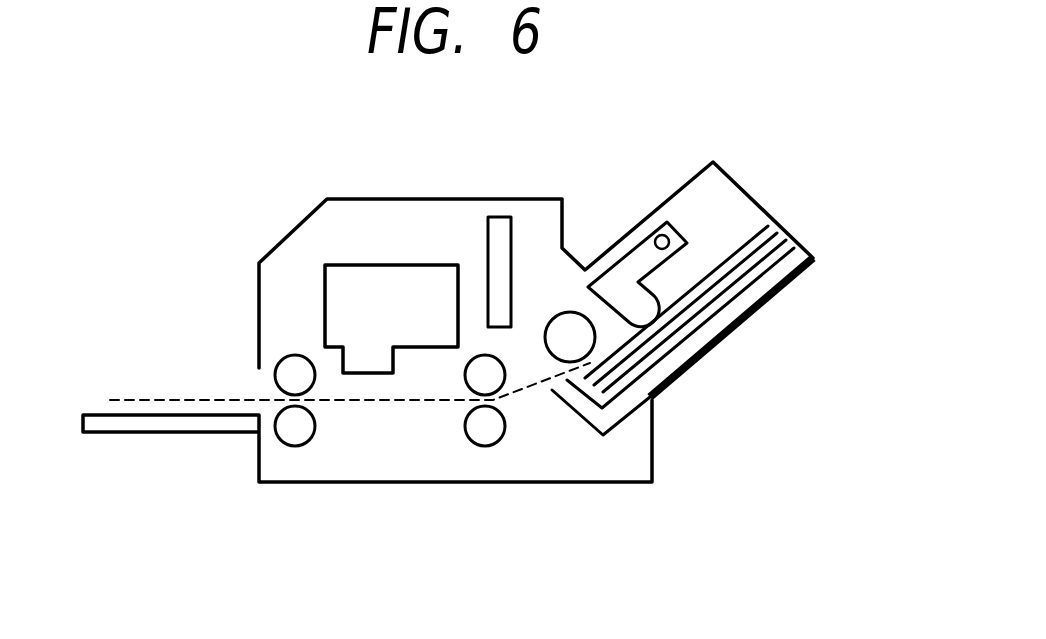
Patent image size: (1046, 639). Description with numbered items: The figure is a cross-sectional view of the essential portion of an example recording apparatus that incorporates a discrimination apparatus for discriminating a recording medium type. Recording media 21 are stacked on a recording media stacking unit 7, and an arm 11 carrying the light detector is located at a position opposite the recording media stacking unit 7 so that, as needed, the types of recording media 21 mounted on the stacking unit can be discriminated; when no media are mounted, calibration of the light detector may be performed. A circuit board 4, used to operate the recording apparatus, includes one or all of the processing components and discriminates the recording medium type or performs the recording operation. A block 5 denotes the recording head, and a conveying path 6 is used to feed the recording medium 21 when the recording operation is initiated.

The circuit board 4 is at (500, 228).
The recording head 5 is at (367, 298).
The conveying path 6 is at (418, 452).
The recording media stacking unit 7 is at (718, 328).
The arm 11 is at (608, 288).
The recording media 21 is at (747, 240).